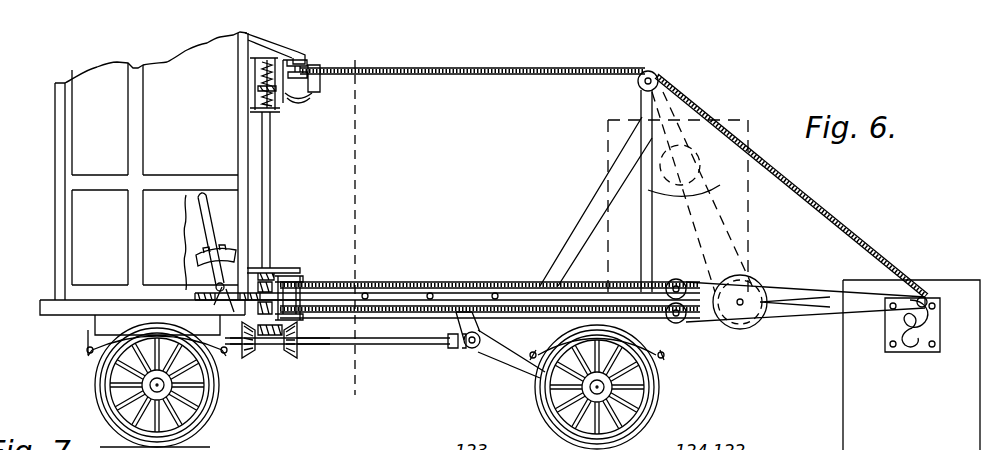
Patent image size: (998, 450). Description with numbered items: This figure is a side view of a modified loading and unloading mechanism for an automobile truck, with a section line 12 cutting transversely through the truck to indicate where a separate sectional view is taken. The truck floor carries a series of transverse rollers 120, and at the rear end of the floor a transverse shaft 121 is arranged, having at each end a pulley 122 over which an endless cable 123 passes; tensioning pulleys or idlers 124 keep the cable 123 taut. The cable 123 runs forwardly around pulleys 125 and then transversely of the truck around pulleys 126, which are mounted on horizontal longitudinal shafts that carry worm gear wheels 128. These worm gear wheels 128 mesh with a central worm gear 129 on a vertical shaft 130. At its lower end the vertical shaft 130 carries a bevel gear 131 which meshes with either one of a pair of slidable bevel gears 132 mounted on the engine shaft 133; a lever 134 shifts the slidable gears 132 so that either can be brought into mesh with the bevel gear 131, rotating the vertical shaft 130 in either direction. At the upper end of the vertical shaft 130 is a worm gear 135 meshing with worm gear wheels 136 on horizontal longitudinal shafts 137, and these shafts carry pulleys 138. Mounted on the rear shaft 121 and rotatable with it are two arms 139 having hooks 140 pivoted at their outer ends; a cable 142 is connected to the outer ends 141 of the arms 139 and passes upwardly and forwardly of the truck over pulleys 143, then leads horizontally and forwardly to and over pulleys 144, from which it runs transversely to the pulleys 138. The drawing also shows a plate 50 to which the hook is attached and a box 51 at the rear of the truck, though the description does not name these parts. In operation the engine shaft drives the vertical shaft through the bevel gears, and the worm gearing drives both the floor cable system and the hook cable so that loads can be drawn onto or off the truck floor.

The section line 12 is at (353, 220).
The plate 50 is at (896, 330).
The box 51 is at (850, 410).
The transverse rollers 120 is at (440, 286).
The transverse shaft 121 is at (745, 300).
The pulley 122 is at (745, 322).
The endless cable 123 is at (497, 290).
The tensioning pulleys 124 is at (676, 279).
The pulleys 125 is at (300, 278).
The pulleys 126 is at (296, 272).
The worm gear wheels 128 is at (270, 268).
The central worm gear 129 is at (270, 282).
The vertical shaft 130 is at (272, 160).
The bevel gear 131 is at (271, 350).
The slidable bevel gears 132 is at (250, 356).
The engine shaft 133 is at (440, 340).
The lever 134 is at (200, 224).
The worm gear 135 is at (262, 70).
The worm gear wheels 136 is at (258, 92).
The horizontal longitudinal shafts 137 is at (283, 100).
The pulleys 138 is at (312, 86).
The arms 139 is at (822, 310).
The hooks 140 is at (916, 345).
The outer ends 141 is at (926, 298).
The cable 142 is at (848, 238).
The pulleys 143 is at (653, 73).
The pulleys 144 is at (300, 98).